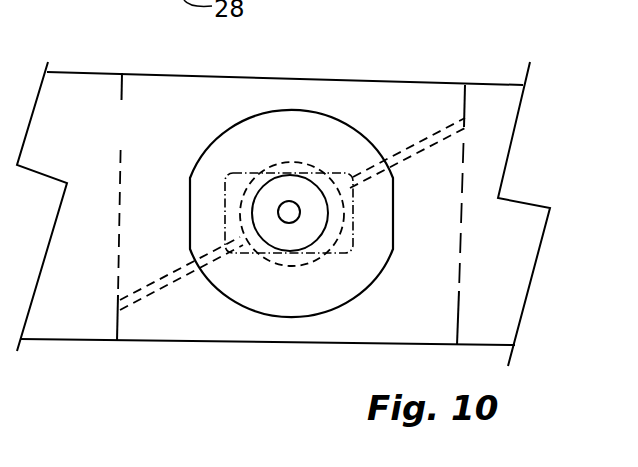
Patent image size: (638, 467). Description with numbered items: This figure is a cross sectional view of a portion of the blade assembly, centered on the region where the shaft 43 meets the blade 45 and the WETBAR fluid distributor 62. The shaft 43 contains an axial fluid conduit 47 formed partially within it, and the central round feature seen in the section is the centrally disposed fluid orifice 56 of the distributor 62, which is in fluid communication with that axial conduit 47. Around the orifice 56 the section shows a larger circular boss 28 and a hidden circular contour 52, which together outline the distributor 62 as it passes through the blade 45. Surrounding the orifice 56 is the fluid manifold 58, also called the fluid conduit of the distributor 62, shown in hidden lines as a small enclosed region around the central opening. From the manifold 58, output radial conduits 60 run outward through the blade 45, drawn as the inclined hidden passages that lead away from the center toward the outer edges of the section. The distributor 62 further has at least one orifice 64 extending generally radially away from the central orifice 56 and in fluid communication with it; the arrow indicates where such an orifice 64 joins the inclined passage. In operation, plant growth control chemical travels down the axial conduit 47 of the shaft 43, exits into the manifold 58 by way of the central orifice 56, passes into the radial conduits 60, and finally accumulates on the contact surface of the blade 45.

The cylindrical boss 28 is at (308, 112).
The shaft 43 is at (325, 235).
The blade 45 is at (238, 343).
The axial fluid conduit 47 is at (91, 13).
The hidden bore 52 is at (294, 164).
The centrally disposed fluid orifice 56 is at (290, 224).
The fluid manifold 58 is at (226, 227).
The output radial conduit 60 is at (132, 297).
The WETBAR fluid distributor 62 is at (466, 105).
The orifice 64 is at (472, 122).